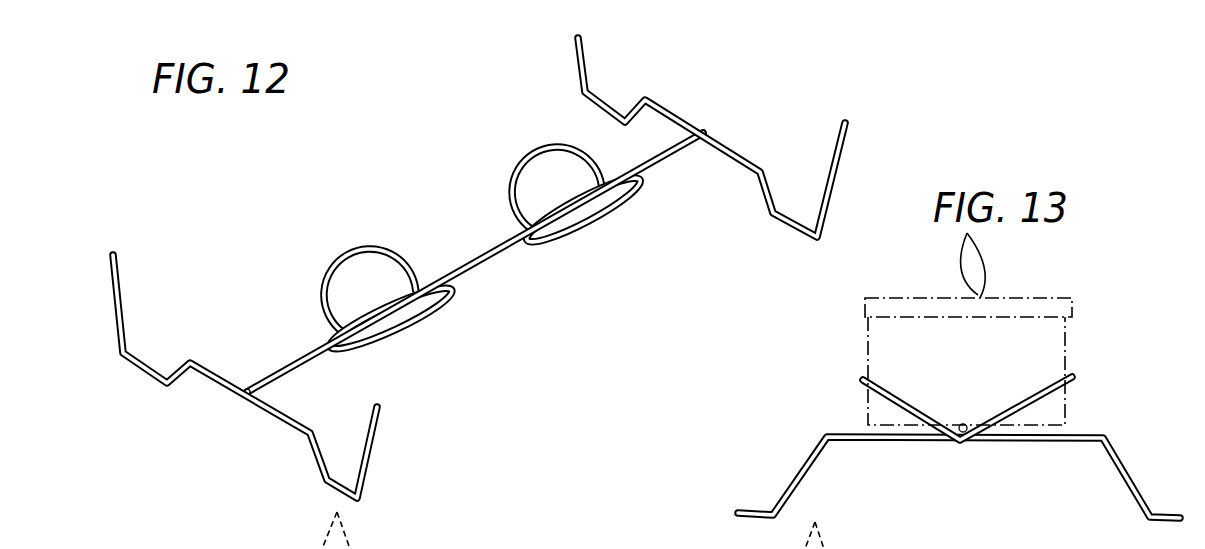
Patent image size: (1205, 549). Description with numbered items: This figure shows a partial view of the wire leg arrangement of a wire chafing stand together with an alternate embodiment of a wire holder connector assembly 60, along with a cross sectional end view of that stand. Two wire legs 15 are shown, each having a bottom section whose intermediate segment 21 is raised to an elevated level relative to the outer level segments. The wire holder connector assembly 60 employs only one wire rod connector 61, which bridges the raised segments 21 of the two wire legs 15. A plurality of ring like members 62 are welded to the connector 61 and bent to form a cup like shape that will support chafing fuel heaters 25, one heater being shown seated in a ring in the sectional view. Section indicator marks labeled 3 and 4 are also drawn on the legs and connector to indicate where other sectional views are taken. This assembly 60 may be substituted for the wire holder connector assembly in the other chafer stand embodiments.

In FIG. 12, the wire leg 15 is at (452, 267).
In FIG. 12, the intermediate segment 21 is at (213, 370).
In FIG. 12, the wire holder connector assembly 60 is at (475, 247).
In FIG. 12, the wire rod connector 61 is at (290, 366).
In FIG. 12, the ring like member 62 is at (417, 276).
In FIG. 13, the chafing fuel heater 25 is at (878, 333).
In FIG. 12, the section line for FIG. 3 is at (478, 141).
In FIG. 12, the section line for FIG. 4 is at (173, 415).